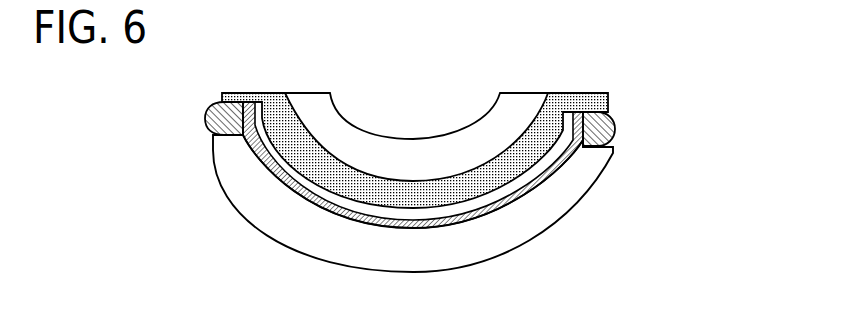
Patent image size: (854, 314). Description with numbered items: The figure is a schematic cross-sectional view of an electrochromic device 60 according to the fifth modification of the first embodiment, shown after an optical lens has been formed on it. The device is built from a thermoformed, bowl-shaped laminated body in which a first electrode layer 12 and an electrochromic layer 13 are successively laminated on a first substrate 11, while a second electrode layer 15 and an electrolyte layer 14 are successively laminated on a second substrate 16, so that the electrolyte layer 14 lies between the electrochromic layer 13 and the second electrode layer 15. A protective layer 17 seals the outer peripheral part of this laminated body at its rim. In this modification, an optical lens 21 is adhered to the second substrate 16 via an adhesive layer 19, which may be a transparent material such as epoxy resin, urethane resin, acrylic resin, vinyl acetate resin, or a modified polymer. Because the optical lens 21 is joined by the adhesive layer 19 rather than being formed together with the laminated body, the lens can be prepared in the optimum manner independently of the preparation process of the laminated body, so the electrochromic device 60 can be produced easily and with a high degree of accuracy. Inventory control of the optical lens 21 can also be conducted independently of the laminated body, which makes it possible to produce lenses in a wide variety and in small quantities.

The first substrate 11 is at (527, 225).
The first electrode layer 12 is at (511, 165).
The electrochromic layer 13 is at (511, 165).
The electrolyte layer 14 is at (511, 165).
The second electrode layer 15 is at (547, 176).
The second substrate 16 is at (261, 115).
The protective layer 17 is at (213, 110).
The adhesive layer 19 is at (578, 102).
The optical lens 21 is at (516, 102).
The electrochromic device 60 is at (420, 82).